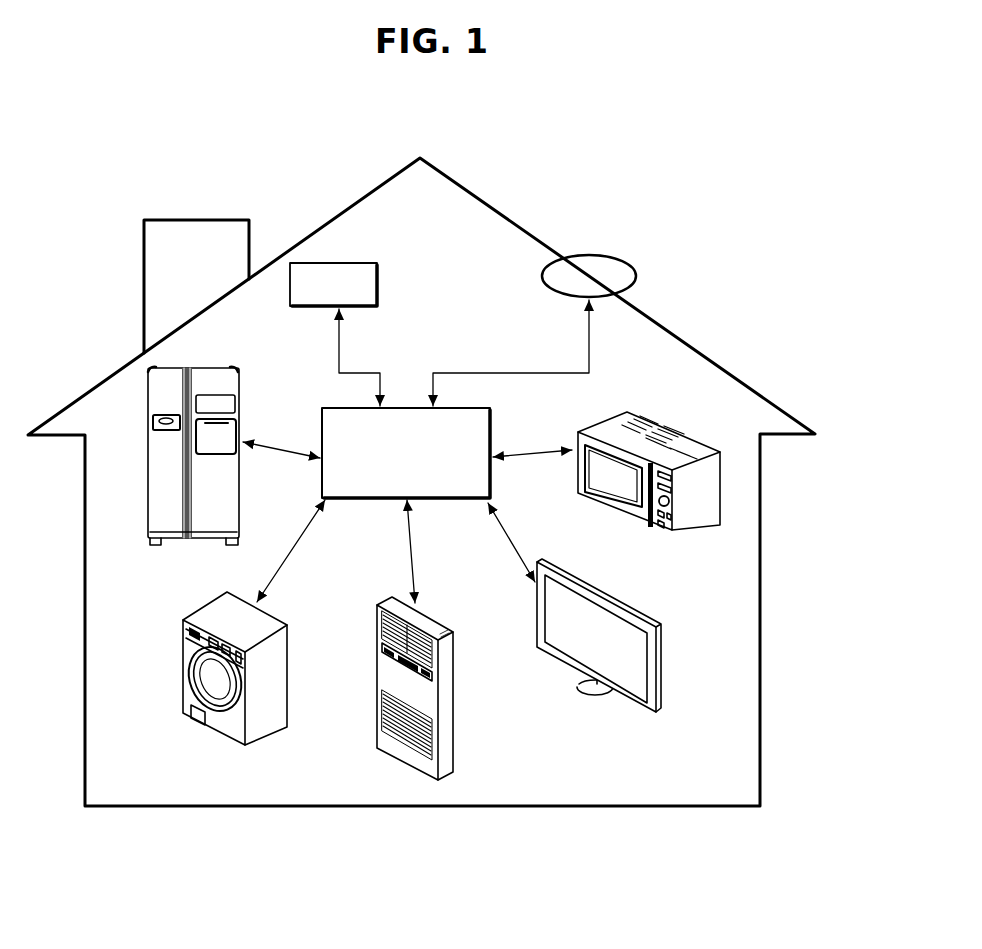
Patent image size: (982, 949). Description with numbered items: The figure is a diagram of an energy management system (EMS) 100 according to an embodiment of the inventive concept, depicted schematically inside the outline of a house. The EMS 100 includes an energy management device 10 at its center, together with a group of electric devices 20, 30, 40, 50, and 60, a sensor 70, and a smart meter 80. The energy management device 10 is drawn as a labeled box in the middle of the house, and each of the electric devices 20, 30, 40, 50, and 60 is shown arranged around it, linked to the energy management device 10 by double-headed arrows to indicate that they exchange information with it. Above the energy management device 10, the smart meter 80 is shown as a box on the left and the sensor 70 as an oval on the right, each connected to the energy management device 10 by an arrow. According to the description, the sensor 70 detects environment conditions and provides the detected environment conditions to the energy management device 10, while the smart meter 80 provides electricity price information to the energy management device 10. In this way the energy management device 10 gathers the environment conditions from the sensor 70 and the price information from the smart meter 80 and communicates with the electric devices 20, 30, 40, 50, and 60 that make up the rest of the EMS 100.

The energy management system 100 is at (659, 166).
The energy management device 10 is at (458, 409).
The electric device 20 is at (239, 379).
The electric device 30 is at (211, 612).
The electric device 40 is at (430, 620).
The electric device 50 is at (626, 605).
The electric device 60 is at (637, 418).
The sensor 70 is at (598, 257).
The smart meter 80 is at (376, 263).